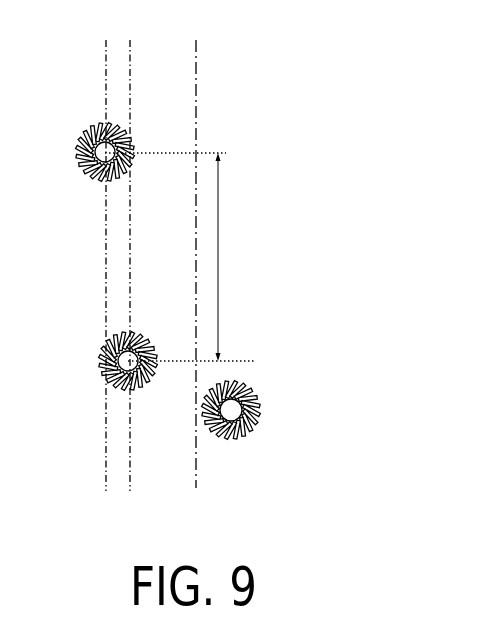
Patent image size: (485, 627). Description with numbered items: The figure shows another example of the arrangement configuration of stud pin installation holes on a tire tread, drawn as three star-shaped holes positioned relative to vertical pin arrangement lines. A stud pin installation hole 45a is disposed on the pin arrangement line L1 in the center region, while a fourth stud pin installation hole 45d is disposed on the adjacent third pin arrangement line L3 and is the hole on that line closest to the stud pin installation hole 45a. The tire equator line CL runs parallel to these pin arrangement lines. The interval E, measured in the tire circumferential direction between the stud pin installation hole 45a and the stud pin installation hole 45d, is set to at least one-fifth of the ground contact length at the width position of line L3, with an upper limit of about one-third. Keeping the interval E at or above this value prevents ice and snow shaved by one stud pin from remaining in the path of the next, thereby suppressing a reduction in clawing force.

The stud pin installation hole 45a is at (84, 170).
The fourth stud pin installation hole 45d is at (150, 382).
The pin arrangement line L1 is at (107, 279).
The third pin arrangement line L3 is at (137, 279).
The tire equator line CL is at (194, 252).
The interval E is at (228, 257).